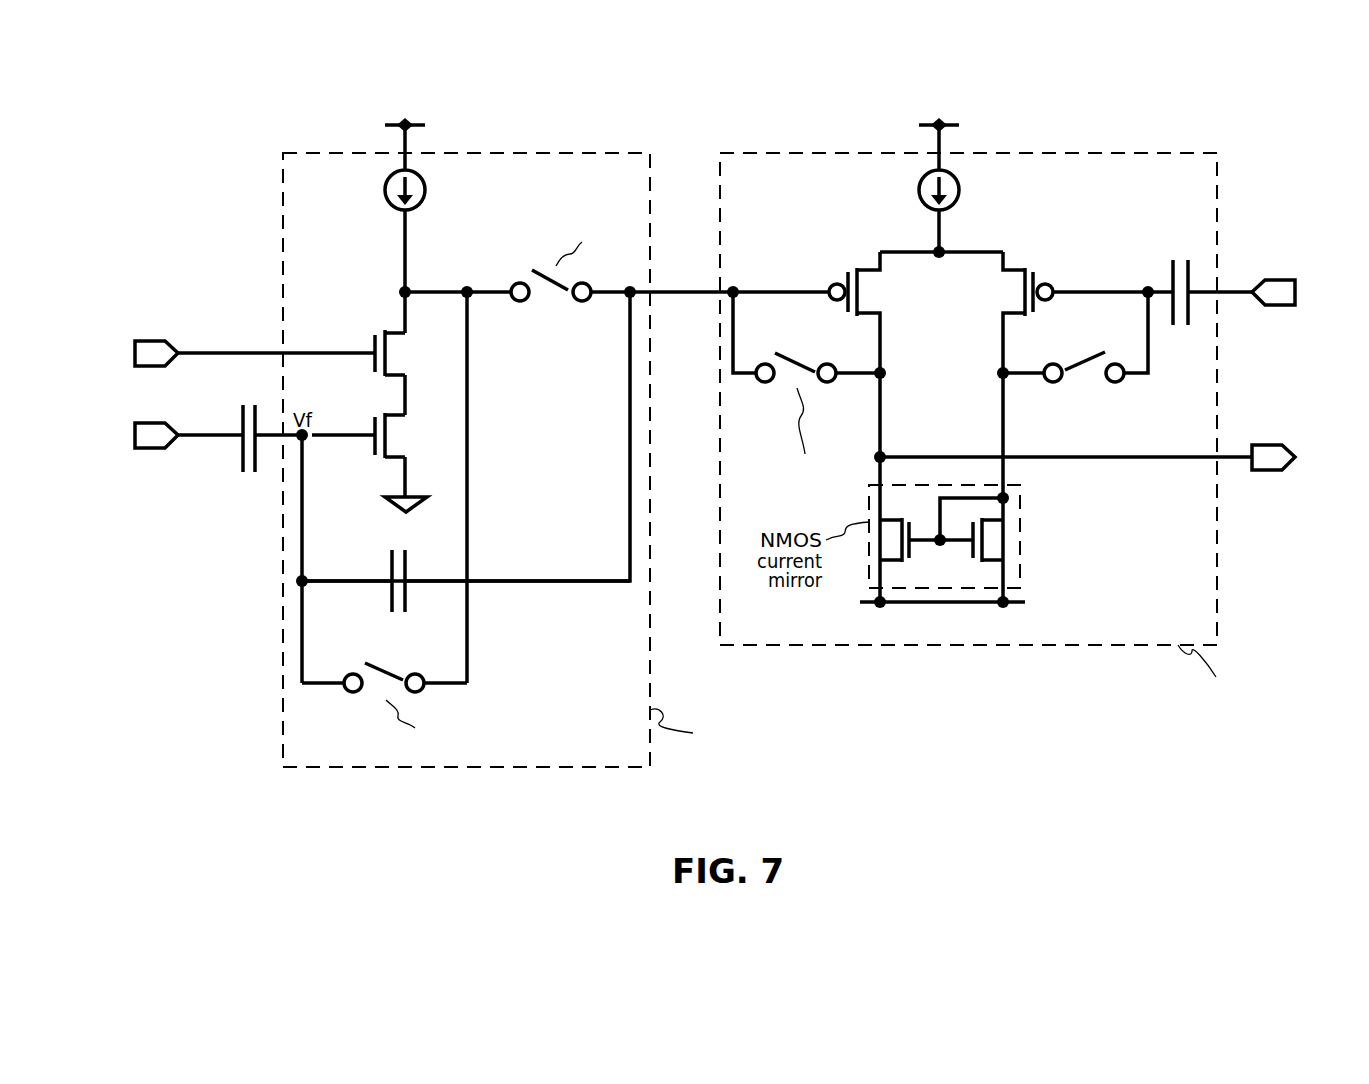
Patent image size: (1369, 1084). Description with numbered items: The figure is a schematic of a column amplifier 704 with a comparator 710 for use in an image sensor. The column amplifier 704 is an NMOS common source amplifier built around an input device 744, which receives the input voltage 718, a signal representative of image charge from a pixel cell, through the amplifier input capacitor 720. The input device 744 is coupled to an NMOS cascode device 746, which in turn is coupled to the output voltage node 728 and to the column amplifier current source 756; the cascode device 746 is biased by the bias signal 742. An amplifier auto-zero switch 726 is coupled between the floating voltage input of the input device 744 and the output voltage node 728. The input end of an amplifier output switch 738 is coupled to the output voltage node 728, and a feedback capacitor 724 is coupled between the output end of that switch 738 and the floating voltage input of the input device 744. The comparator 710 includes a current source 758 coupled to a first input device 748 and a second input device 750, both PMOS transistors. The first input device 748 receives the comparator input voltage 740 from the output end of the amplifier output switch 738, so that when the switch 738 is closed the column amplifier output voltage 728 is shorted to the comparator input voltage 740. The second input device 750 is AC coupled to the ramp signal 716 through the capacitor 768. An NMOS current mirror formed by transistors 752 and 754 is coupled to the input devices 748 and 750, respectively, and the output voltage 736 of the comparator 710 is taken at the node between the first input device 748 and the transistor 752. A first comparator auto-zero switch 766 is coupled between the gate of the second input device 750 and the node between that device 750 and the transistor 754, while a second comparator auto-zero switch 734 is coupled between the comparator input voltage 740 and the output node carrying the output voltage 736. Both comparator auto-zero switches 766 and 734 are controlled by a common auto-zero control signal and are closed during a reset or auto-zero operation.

The column amplifier 704 is at (650, 672).
The comparator 710 is at (1117, 645).
The ramp signal 716 is at (1323, 280).
The input voltage Vin 718 is at (98, 434).
The amplifier input capacitor Cinamp 720 is at (250, 402).
The feedback capacitor Cfb 724 is at (412, 572).
The amplifier auto-zero switch 726 is at (390, 672).
The output Vamp voltage node 728 is at (470, 262).
The comparator auto-zero switch2 734 is at (794, 484).
The Vout voltage output 736 is at (1323, 447).
The amplifier output switch 738 is at (548, 302).
The input Vincmp 740 is at (795, 270).
The bias signal VBC 742 is at (112, 342).
The input device 744 is at (410, 435).
The NMOS cascode device 746 is at (410, 355).
The first input device 748 is at (877, 305).
The second input device 750 is at (1013, 305).
The transistor 752 is at (915, 530).
The transistor 754 is at (974, 545).
The column amplifier current source 756 is at (425, 190).
The current source 758 is at (960, 190).
The comparator auto-zero switch 1 766 is at (1091, 383).
The capacitor 768 is at (1180, 258).